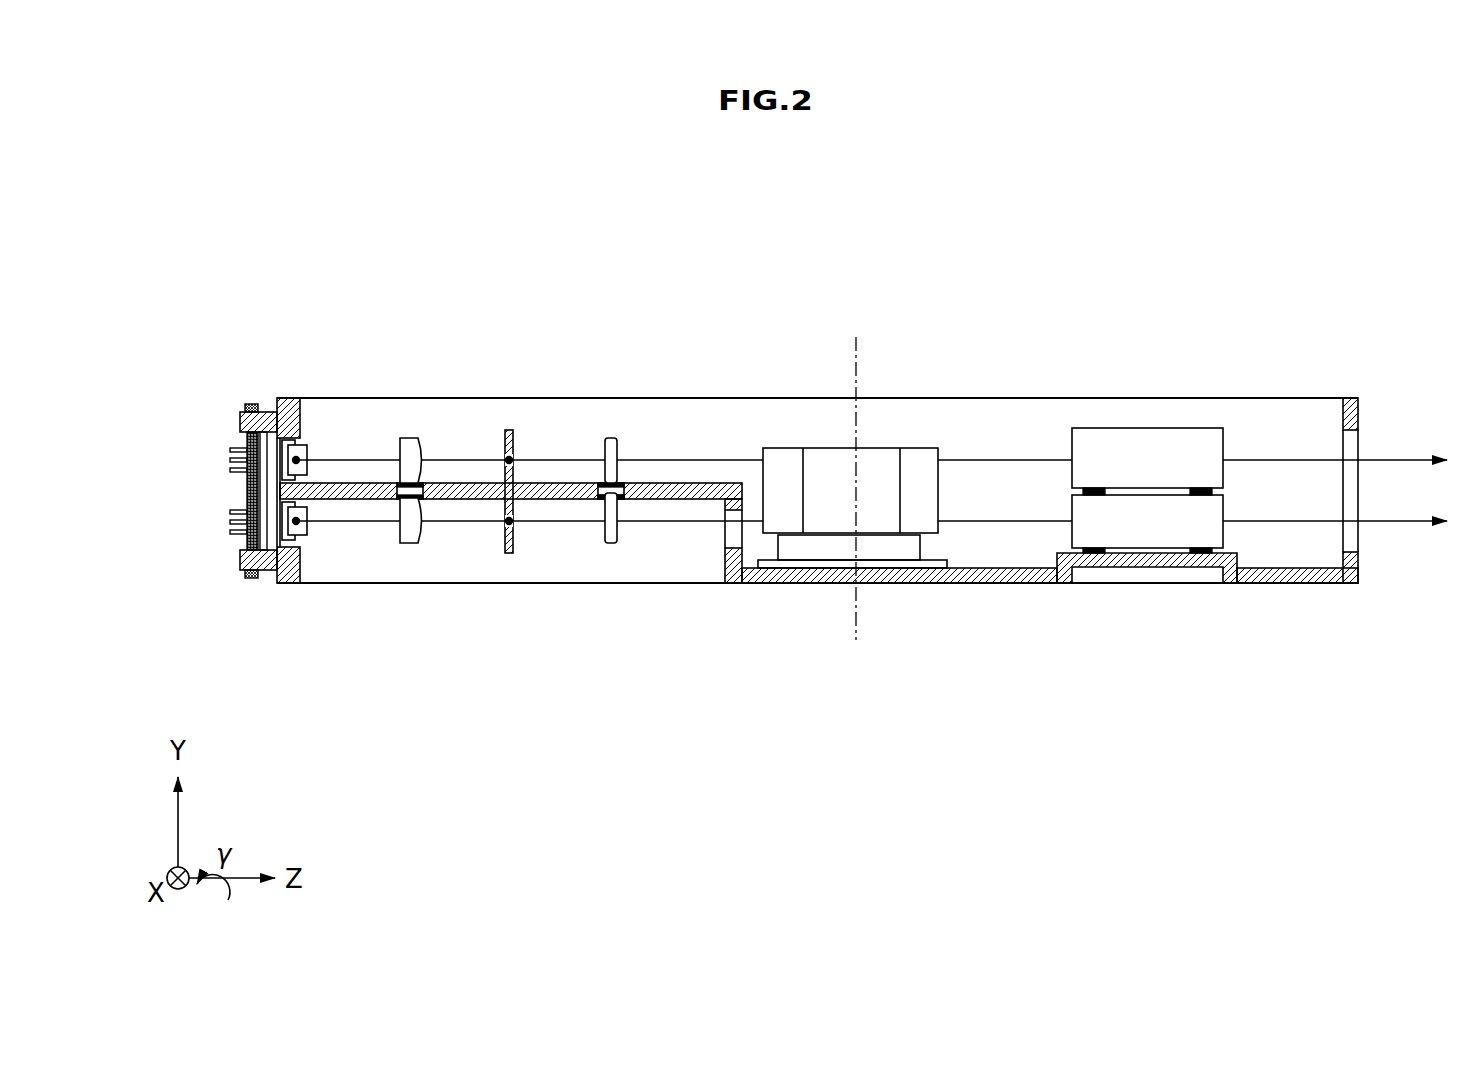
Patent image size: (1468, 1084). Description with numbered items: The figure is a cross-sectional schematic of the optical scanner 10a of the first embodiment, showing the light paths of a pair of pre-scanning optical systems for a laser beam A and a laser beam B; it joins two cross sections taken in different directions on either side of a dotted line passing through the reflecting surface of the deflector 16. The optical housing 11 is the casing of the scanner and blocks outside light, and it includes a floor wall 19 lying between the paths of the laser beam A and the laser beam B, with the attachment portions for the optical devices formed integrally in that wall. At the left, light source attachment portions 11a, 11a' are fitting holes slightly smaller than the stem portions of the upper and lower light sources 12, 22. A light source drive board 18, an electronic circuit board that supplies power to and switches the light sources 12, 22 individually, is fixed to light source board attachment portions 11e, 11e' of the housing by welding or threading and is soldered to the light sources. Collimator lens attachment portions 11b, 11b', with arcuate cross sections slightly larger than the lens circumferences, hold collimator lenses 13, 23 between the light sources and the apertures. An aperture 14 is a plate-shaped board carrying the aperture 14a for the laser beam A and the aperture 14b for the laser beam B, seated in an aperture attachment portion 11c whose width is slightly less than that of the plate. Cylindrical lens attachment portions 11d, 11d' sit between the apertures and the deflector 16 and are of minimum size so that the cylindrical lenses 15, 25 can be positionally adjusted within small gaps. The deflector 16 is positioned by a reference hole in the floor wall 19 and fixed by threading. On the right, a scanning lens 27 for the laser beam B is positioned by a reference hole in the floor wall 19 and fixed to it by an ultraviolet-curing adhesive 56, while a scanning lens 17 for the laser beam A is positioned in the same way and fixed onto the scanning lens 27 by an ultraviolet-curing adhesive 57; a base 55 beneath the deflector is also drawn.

The optical scanner 10a is at (217, 178).
The optical housing 11 is at (770, 397).
The light source attachment portion 11a is at (239, 344).
The light source attachment portion 11a' is at (221, 624).
The collimator lens attachment portion 11b is at (331, 409).
The collimator lens attachment portion 11b' is at (331, 572).
The aperture attachment portion 11c is at (501, 478).
The cylindrical lens attachment portion 11d is at (577, 418).
The cylindrical lens attachment portion 11d' is at (569, 569).
The light source board attachment portion 11e is at (181, 380).
The light source board attachment portion 11e' is at (185, 599).
The light source 12 is at (230, 457).
The collimator lens 13 is at (405, 432).
The aperture 14 is at (508, 427).
The aperture 14a is at (497, 470).
The aperture 14b is at (506, 528).
The cylindrical lens 15 is at (615, 430).
The deflector 16 is at (885, 445).
The scanning lens 17 is at (1142, 427).
The light source drive board 18 is at (250, 398).
The floor wall 19 is at (703, 481).
The light source 22 is at (230, 535).
The collimator lens 23 is at (405, 547).
The cylindrical lens 25 is at (613, 548).
The scanning lens 27 is at (1150, 563).
The deflector base 55 is at (782, 585).
The ultraviolet-curing adhesive 56 is at (1093, 555).
The ultraviolet-curing adhesive 57 is at (1094, 488).
The laser beam A is at (1270, 458).
The laser beam B is at (1280, 523).